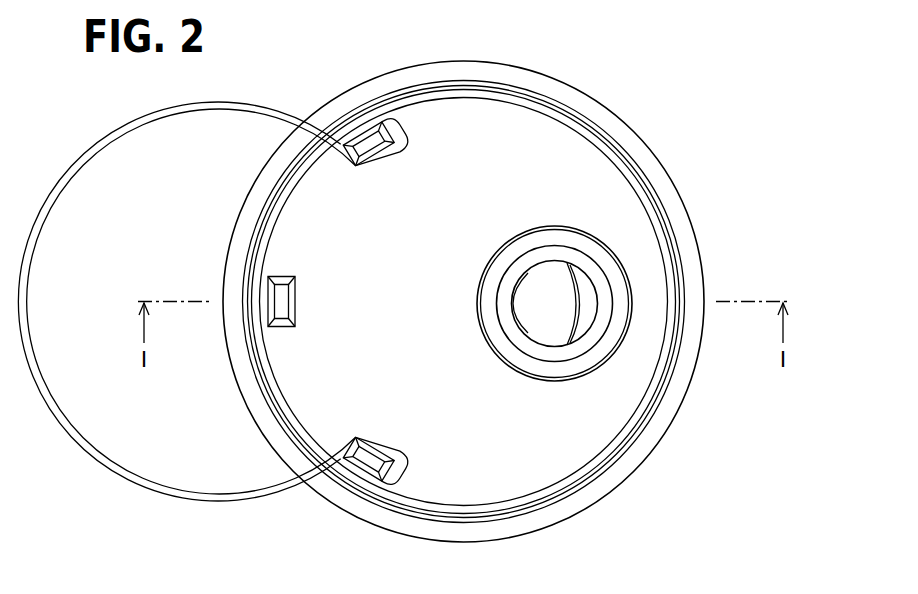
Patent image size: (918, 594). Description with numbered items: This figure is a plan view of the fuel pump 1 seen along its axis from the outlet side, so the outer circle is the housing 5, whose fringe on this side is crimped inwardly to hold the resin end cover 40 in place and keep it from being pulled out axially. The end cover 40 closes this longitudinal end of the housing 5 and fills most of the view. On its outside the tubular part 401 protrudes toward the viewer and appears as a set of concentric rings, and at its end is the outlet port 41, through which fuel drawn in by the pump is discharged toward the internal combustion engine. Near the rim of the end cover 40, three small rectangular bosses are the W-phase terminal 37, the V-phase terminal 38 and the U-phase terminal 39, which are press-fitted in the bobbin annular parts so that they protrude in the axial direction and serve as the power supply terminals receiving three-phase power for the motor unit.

The fuel pump 1 is at (665, 83).
The housing 5 is at (598, 108).
The end cover 40 is at (593, 160).
The tubular part 401 is at (582, 244).
The outlet port 41 is at (558, 308).
The W-phase terminal 37 is at (360, 470).
The V-phase terminal 38 is at (282, 278).
The U-phase terminal 39 is at (368, 132).